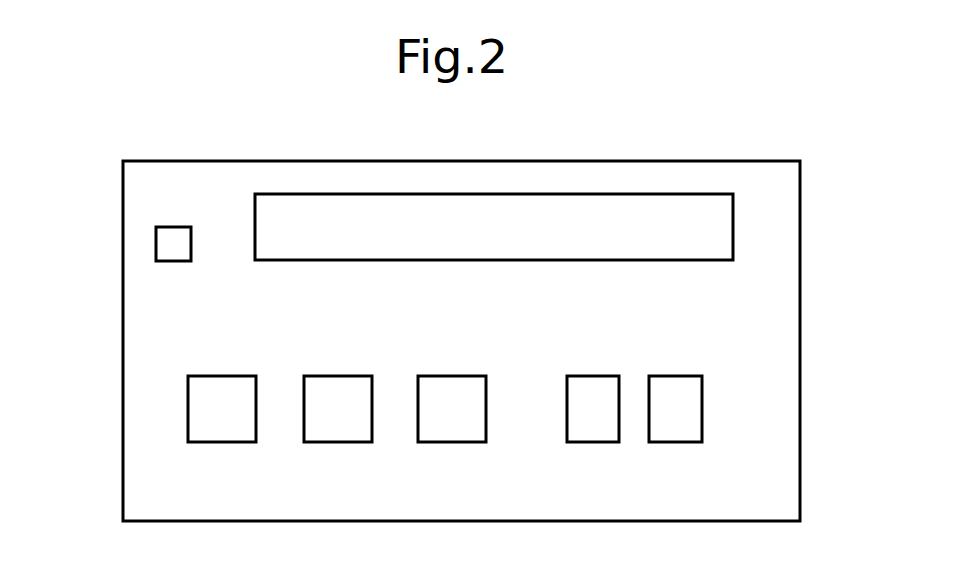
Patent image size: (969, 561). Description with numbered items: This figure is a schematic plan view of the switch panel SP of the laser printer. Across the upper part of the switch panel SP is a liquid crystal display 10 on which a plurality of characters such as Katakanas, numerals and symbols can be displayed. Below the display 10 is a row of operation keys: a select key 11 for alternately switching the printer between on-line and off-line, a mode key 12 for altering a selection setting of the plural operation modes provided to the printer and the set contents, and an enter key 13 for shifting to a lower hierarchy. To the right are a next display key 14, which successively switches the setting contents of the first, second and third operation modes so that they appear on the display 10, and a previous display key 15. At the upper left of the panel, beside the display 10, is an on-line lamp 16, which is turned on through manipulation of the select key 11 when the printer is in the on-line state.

The switch panel SP is at (689, 159).
The liquid crystal display 10 is at (610, 194).
The select key 11 is at (216, 390).
The mode key 12 is at (331, 390).
The enter key 13 is at (444, 390).
The next display key 14 is at (594, 390).
The previous display key 15 is at (676, 390).
The on-line lamp 16 is at (155, 239).